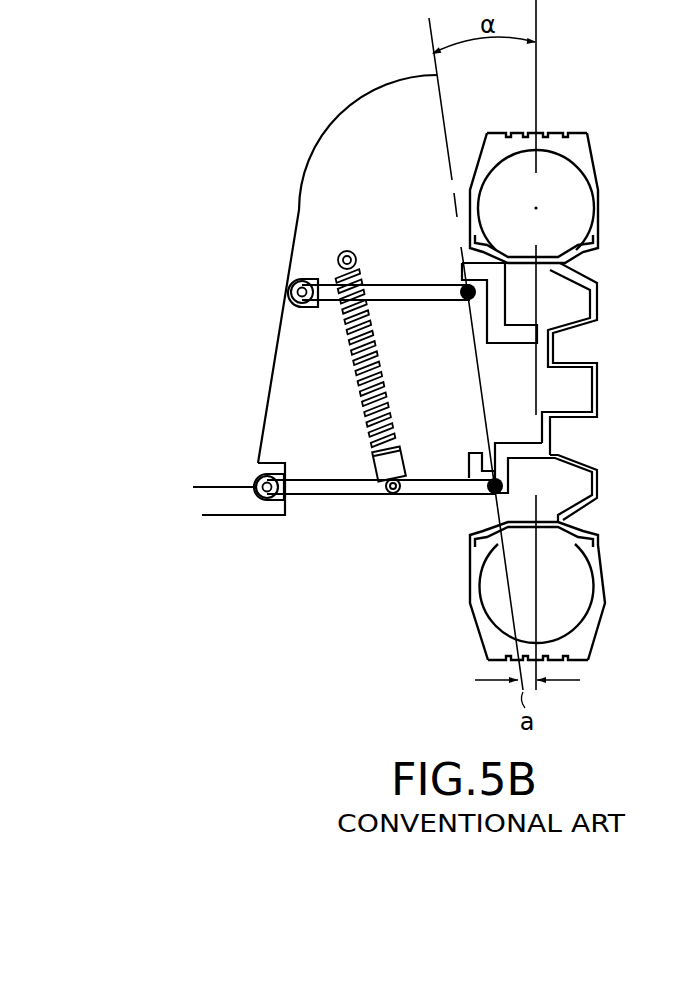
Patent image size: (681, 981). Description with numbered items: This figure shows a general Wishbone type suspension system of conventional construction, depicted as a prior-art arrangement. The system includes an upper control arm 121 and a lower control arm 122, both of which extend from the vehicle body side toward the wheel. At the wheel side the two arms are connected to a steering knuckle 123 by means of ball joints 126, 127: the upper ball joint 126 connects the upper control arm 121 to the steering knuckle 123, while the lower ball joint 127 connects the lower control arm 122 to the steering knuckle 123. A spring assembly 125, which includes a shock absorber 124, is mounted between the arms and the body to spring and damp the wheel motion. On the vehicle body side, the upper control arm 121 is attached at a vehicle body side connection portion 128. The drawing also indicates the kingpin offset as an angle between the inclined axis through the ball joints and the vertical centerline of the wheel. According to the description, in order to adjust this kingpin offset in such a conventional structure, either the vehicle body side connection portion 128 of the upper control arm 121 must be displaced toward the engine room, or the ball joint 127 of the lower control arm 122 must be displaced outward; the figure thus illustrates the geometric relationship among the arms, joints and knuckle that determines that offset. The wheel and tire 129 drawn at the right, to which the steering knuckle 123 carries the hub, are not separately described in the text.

The upper control arm 121 is at (392, 289).
The lower control arm 122 is at (332, 486).
The steering knuckle 123 is at (515, 343).
The shock absorber 124 is at (383, 465).
The spring assembly 125 is at (336, 341).
The ball joint 126 is at (460, 285).
The ball joint 127 is at (490, 494).
The vehicle body side connection portion 128 is at (292, 288).
The tire 129 is at (583, 155).